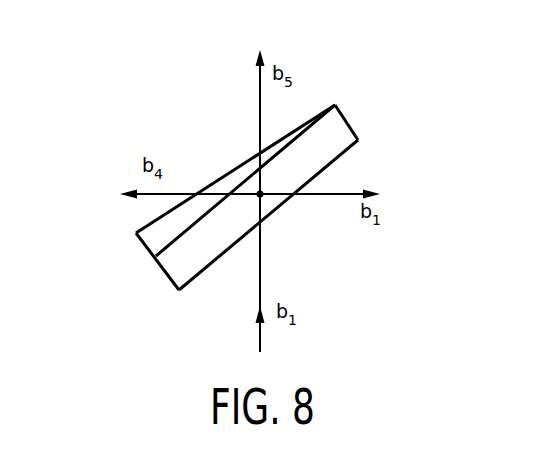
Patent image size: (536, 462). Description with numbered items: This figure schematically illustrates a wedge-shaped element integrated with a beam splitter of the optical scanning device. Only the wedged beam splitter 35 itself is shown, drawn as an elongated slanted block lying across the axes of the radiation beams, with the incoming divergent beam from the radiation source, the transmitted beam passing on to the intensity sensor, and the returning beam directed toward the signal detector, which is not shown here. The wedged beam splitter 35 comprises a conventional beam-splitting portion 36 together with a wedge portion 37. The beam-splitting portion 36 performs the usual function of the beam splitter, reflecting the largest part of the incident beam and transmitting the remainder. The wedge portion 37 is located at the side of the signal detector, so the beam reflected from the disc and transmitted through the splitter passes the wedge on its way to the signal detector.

The wedged beam splitter 35 is at (399, 90).
The beam-splitting portion 36 is at (345, 130).
The wedge portion 37 is at (157, 237).